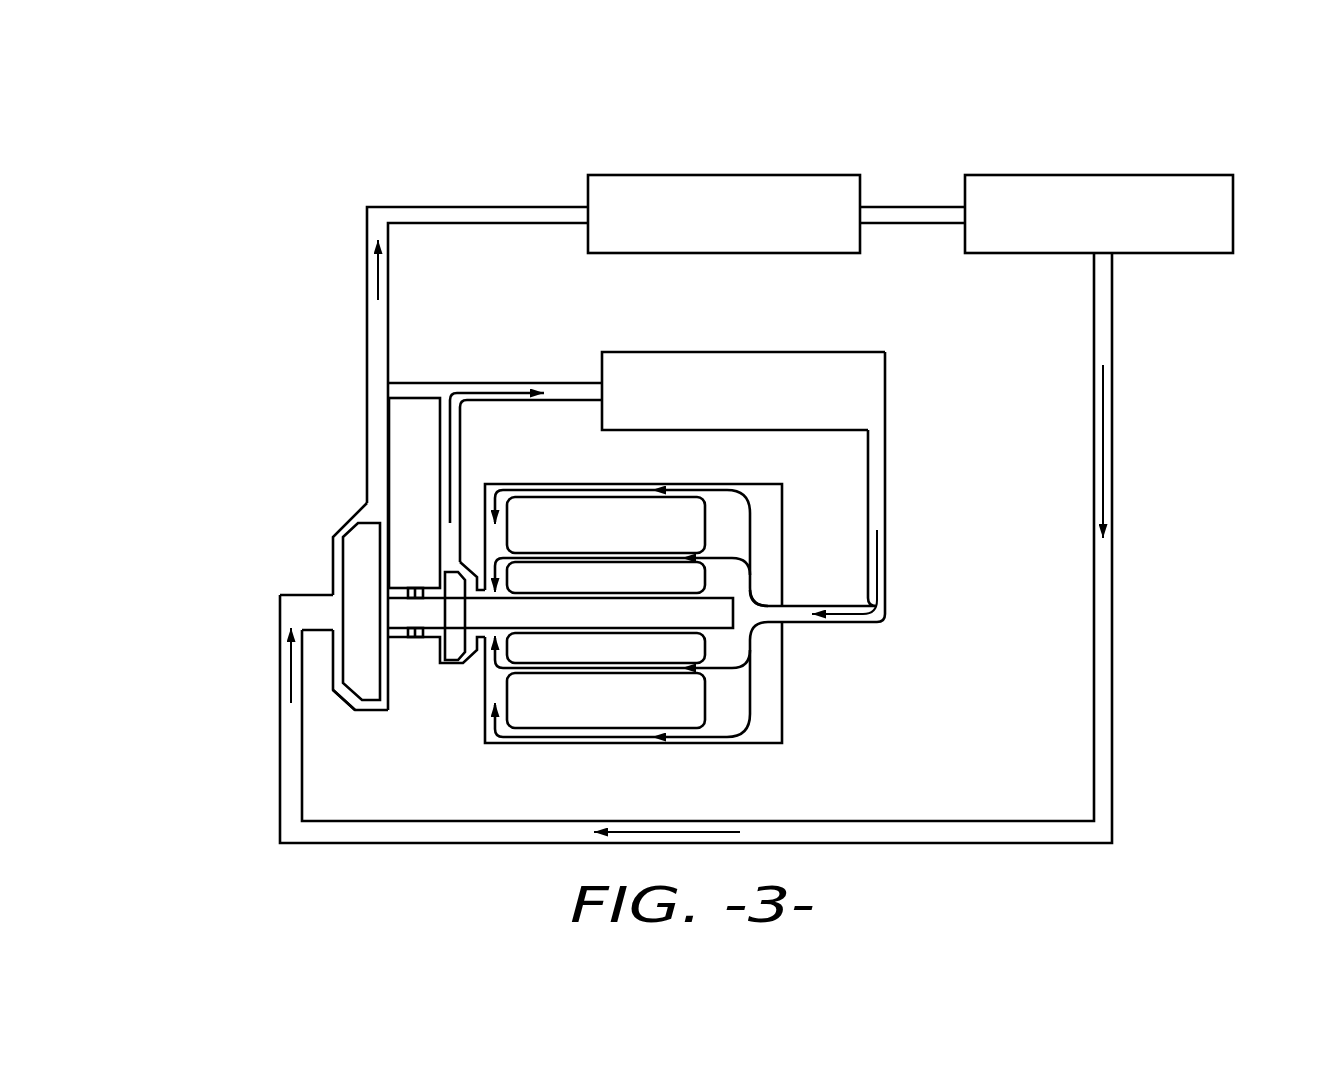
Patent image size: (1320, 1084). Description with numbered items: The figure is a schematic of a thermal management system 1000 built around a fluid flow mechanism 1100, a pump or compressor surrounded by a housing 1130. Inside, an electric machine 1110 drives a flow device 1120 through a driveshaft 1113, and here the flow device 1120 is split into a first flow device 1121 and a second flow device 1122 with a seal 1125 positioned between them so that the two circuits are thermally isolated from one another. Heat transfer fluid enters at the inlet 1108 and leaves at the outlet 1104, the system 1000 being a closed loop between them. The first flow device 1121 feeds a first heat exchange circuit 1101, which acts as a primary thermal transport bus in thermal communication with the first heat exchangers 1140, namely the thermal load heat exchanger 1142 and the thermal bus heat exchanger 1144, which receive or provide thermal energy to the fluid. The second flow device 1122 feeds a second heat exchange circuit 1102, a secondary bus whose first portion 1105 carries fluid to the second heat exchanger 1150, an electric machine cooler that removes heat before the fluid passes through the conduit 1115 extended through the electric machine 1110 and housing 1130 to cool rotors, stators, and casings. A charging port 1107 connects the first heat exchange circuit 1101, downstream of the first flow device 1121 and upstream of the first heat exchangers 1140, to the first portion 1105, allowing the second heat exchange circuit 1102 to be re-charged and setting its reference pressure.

The thermal management system 1000 is at (278, 238).
The first heat exchanger 1140 is at (892, 115).
The thermal load heat exchanger 1142 is at (716, 175).
The thermal bus heat exchanger 1144 is at (1116, 175).
The second heat exchanger 1150 is at (747, 352).
The first heat exchange circuit 1101 is at (392, 262).
The charging port 1107 is at (414, 383).
The first portion of the second heat exchange circuit 1105 is at (462, 425).
The seal 1125 is at (415, 588).
The outlet of the flow device 1104 is at (366, 492).
The first flow device 1121 is at (362, 557).
The inlet of the flow device 1108 is at (304, 596).
The flow device 1120 is at (330, 704).
The second flow device 1122 is at (456, 652).
The electric machine 1110 is at (568, 722).
The fluid flow mechanism 1100 is at (622, 756).
The housing 1130 is at (754, 746).
The conduit 1115 is at (704, 676).
The driveshaft 1113 is at (742, 606).
The second heat exchange circuit 1102 is at (888, 484).